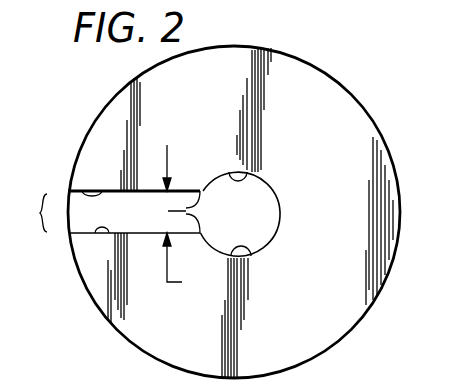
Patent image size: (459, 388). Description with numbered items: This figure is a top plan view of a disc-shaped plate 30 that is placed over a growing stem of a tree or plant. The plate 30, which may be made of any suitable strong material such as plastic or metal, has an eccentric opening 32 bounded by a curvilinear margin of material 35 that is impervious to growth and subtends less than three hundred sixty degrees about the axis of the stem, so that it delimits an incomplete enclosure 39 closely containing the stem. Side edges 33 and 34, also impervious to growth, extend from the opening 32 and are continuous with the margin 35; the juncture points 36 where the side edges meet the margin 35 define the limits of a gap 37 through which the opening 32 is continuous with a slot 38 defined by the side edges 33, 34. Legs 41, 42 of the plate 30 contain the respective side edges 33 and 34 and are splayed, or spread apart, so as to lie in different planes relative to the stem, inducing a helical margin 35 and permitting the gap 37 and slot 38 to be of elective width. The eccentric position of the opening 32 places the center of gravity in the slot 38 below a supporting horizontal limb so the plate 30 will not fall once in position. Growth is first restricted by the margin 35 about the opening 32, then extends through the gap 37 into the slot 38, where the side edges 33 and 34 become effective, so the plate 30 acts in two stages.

The disc-shaped plate 30 is at (250, 46).
The eccentric opening 32 is at (229, 172).
The side edge 33 is at (80, 191).
The side edge 34 is at (82, 235).
The curvilinear margin of material 35 is at (248, 252).
The juncture points 36 is at (165, 212).
The gap 37 is at (193, 223).
The slot 38 is at (28, 213).
The incomplete enclosure 39 is at (248, 227).
The leg 41 is at (125, 103).
The leg 42 is at (138, 341).